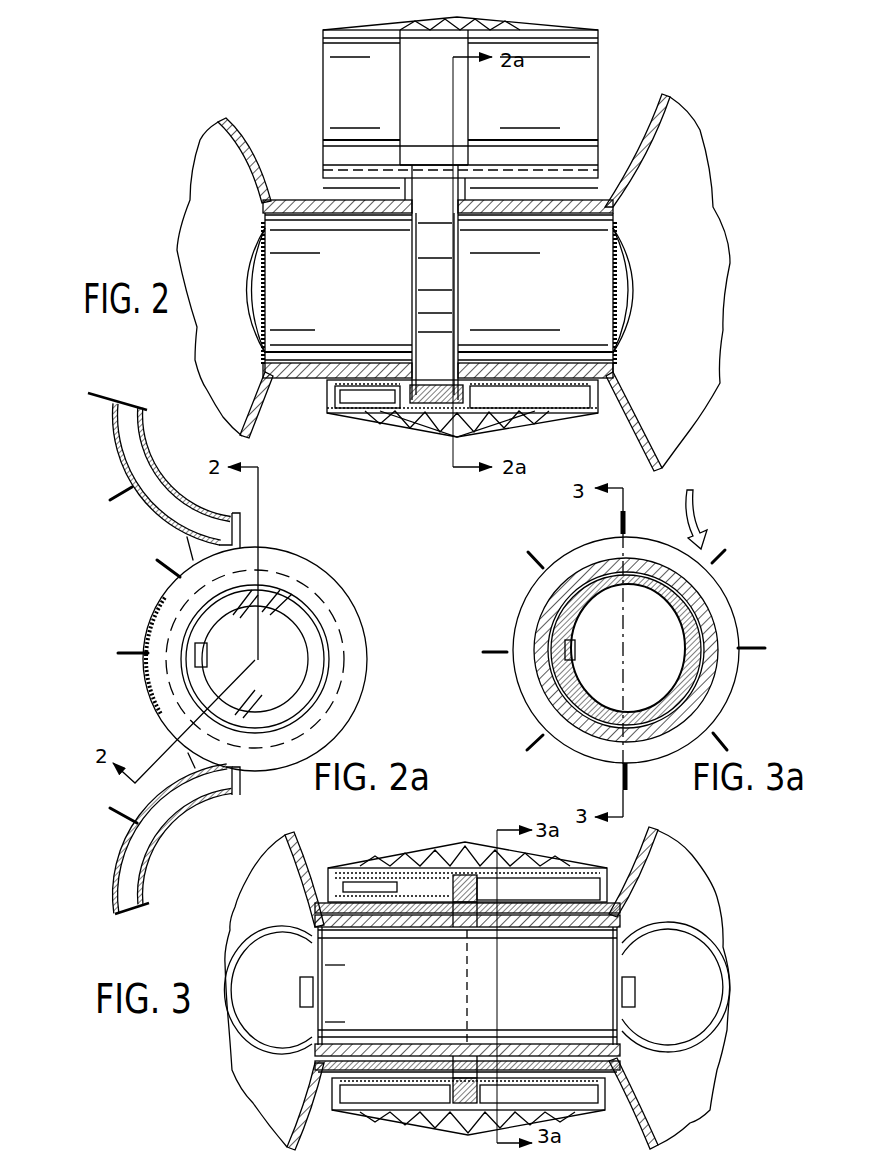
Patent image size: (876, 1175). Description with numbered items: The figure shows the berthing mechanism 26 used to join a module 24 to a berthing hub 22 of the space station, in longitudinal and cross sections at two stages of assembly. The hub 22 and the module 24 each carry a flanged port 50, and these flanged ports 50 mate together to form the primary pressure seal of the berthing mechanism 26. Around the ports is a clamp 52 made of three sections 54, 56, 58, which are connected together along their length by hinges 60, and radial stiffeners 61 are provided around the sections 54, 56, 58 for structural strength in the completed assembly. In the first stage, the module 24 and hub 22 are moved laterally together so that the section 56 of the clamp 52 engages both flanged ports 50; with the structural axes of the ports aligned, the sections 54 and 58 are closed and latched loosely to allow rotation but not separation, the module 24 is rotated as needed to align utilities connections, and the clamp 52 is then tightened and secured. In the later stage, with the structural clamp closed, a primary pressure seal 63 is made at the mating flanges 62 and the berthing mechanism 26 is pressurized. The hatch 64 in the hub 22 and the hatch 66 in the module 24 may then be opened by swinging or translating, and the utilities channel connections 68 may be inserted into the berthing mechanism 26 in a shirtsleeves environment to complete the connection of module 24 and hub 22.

In FIG. 2, the berthing hub 22 is at (225, 203).
In FIG. 3, the berthing hub 22 is at (272, 905).
In FIG. 2, the module 24 is at (682, 203).
In FIG. 3, the module 24 is at (674, 905).
In FIG. 2, the berthing mechanism 26 is at (415, 437).
In FIG. 2, the flanged port 50 is at (411, 188).
In FIG. 2A, the flanged port 50 is at (305, 567).
In FIG. 3, the flanged port 50 is at (457, 1090).
In FIG. 2, the clamp 52 is at (343, 422).
In FIG. 2A, the clamp 52 is at (142, 617).
In FIG. 3A, the clamp 52 is at (512, 598).
In FIG. 2, the clamp section 54 is at (577, 78).
In FIG. 2A, the clamp section 54 is at (147, 508).
In FIG. 3A, the clamp section 54 is at (727, 580).
In FIG. 2A, the clamp section 56 is at (153, 695).
In FIG. 3A, the clamp section 56 is at (513, 690).
In FIG. 2A, the clamp section 58 is at (125, 840).
In FIG. 3A, the clamp section 58 is at (737, 697).
In FIG. 2, the hinge 60 is at (558, 167).
In FIG. 2A, the hinge 60 is at (237, 547).
In FIG. 3A, the hinge 60 is at (605, 563).
In FIG. 2, the radial stiffener 61 is at (540, 22).
In FIG. 2A, the radial stiffener 61 is at (113, 490).
In FIG. 3A, the radial stiffener 61 is at (750, 648).
In FIG. 3, the radial stiffener 61 is at (408, 852).
In FIG. 3, the mating flange 62 is at (453, 1133).
In FIG. 3, the primary pressure seal 63 is at (460, 927).
In FIG. 2, the hatch 64 is at (262, 272).
In FIG. 2A, the hatch 64 is at (293, 671).
In FIG. 3, the hatch 64 is at (267, 1006).
In FIG. 2, the hatch 66 is at (632, 274).
In FIG. 3A, the hatch 66 is at (573, 670).
In FIG. 3, the hatch 66 is at (703, 1003).
In FIG. 3A, the utilities channel connection 68 is at (651, 580).
In FIG. 3, the utilities channel connection 68 is at (382, 927).